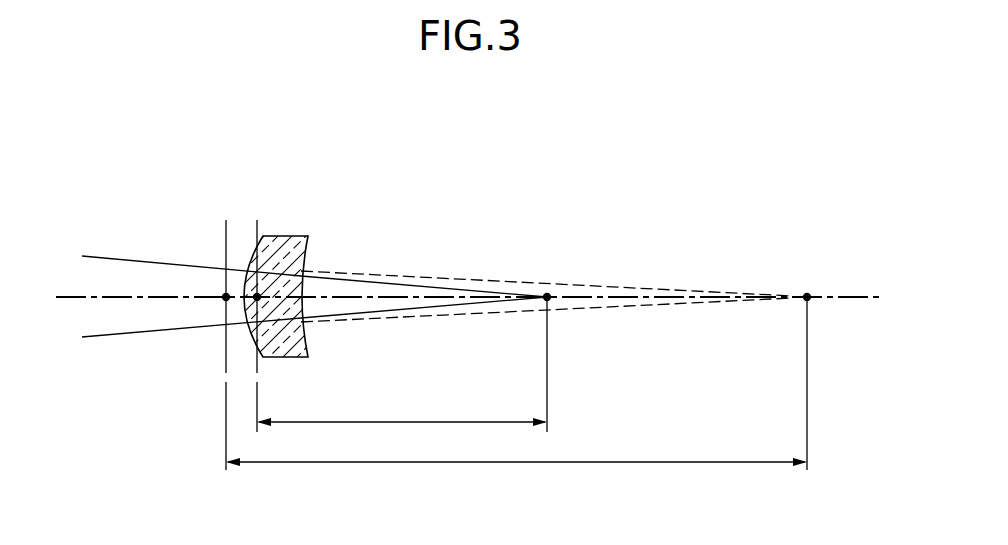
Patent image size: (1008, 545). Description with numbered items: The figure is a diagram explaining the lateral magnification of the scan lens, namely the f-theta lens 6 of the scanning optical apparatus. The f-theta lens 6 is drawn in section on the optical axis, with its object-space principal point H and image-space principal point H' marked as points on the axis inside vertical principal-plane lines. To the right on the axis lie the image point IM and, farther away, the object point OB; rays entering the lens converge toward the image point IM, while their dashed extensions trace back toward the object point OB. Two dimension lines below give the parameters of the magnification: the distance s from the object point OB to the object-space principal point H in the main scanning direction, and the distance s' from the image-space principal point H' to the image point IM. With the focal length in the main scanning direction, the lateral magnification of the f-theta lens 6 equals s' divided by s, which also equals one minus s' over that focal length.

The f-theta lens 6 is at (286, 236).
The object-space principal point H is at (208, 345).
The image-space principal point H' is at (246, 326).
The image point IM is at (548, 293).
The object point OB is at (808, 293).
The distance from object point to object-space principal point s is at (516, 451).
The distance from image-space principal point to image point s' is at (402, 409).